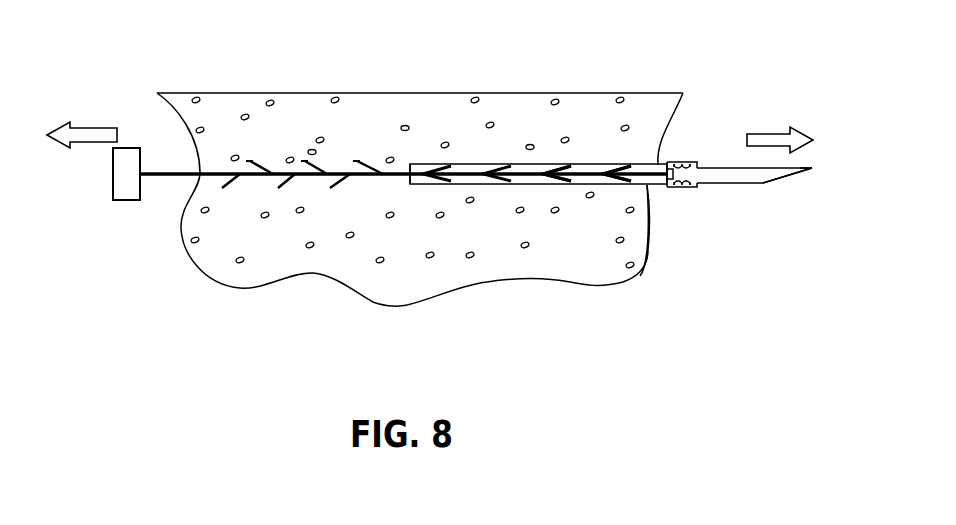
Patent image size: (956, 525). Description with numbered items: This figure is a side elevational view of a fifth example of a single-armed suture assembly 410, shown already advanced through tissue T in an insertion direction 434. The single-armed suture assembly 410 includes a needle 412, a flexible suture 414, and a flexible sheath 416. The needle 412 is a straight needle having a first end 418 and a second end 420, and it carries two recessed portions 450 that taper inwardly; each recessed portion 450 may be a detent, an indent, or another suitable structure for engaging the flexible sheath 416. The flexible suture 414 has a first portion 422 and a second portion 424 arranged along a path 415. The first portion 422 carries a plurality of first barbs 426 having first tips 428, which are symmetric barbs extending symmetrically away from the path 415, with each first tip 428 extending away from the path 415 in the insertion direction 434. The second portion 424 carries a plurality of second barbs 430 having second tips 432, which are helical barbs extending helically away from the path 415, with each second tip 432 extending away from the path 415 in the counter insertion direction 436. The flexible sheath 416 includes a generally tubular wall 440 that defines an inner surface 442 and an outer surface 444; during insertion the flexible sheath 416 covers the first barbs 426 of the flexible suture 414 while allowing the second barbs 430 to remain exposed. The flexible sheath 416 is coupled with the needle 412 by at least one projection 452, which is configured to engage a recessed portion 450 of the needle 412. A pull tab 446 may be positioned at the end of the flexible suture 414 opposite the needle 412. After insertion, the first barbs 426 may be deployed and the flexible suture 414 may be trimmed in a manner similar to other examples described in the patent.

The tissue T is at (211, 120).
The single-armed suture assembly 410 is at (761, 224).
The needle 412 is at (774, 184).
The flexible suture 414 is at (395, 123).
The path 415 is at (169, 178).
The flexible sheath 416 is at (678, 198).
The first end 418 is at (812, 168).
The second end 420 is at (656, 166).
The first portion 422 is at (522, 142).
The second portion 424 is at (303, 145).
The first barbs 426 is at (546, 186).
The first tips 428 is at (623, 184).
The second barbs 430 is at (298, 185).
The second tips 432 is at (222, 188).
The insertion direction 434 is at (766, 138).
The counter insertion direction 436 is at (93, 135).
The tubular wall 440 is at (585, 160).
The inner surface 442 is at (645, 186).
The outer surface 444 is at (460, 164).
The pull tab 446 is at (127, 196).
The recessed portion 450 is at (682, 165).
The projection 452 is at (685, 188).